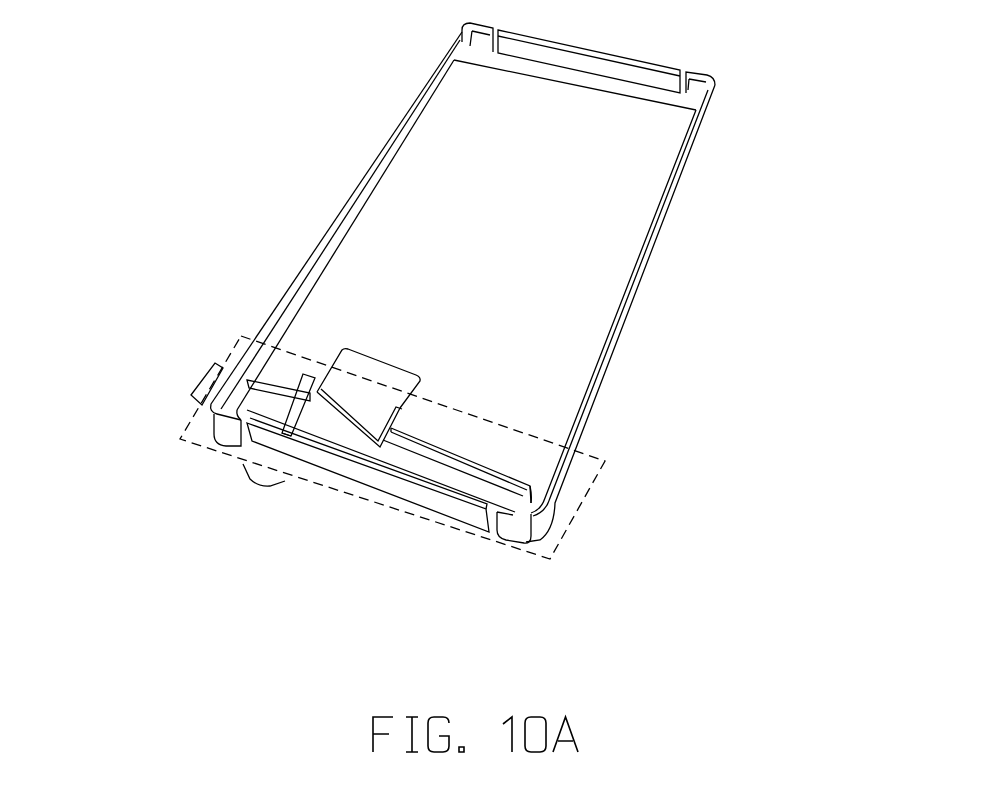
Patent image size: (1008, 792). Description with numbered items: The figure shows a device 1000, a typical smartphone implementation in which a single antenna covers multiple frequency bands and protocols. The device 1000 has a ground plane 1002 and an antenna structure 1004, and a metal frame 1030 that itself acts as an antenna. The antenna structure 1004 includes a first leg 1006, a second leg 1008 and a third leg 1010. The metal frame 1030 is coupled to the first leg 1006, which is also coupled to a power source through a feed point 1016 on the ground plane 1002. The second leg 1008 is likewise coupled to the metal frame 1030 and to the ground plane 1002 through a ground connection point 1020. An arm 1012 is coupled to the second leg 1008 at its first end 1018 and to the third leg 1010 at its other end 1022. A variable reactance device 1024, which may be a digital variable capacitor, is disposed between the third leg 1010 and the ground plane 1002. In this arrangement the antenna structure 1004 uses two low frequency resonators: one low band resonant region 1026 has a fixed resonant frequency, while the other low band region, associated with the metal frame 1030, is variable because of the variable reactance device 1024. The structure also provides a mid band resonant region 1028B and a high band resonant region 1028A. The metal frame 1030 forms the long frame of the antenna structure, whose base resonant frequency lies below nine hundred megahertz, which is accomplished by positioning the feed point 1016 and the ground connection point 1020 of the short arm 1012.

The device 1000 is at (722, 60).
The ground plane 1002 is at (440, 155).
The antenna structure 1004 is at (207, 442).
The first leg 1006 is at (250, 386).
The second leg 1008 is at (300, 390).
The third leg 1010 is at (535, 485).
The arm 1012 is at (521, 522).
The feed point 1016 is at (308, 374).
The first end 1018 is at (302, 417).
The ground connection point 1020 is at (385, 441).
The end 1022 is at (528, 509).
The variable reactance device 1024 is at (390, 412).
The low band resonant region 1026 is at (388, 515).
The high band resonant region 1028A is at (164, 381).
The mid band resonant region 1028B is at (244, 495).
The metal frame 1030 is at (648, 263).